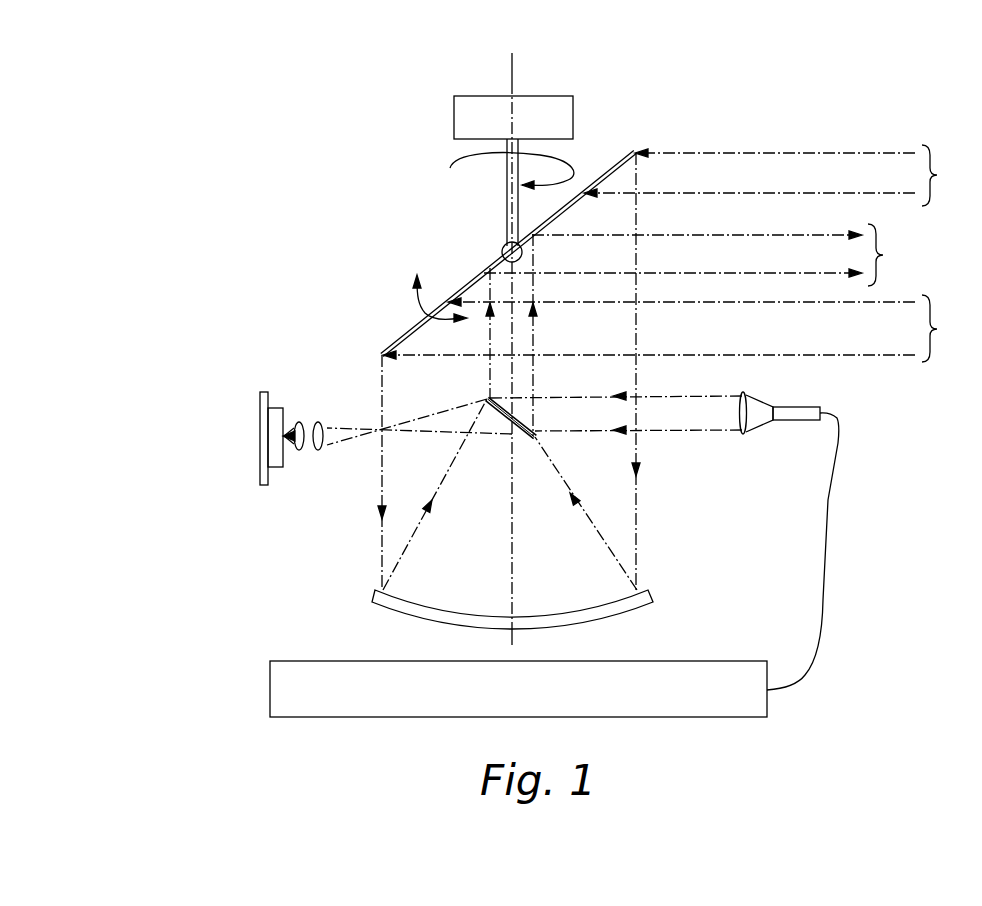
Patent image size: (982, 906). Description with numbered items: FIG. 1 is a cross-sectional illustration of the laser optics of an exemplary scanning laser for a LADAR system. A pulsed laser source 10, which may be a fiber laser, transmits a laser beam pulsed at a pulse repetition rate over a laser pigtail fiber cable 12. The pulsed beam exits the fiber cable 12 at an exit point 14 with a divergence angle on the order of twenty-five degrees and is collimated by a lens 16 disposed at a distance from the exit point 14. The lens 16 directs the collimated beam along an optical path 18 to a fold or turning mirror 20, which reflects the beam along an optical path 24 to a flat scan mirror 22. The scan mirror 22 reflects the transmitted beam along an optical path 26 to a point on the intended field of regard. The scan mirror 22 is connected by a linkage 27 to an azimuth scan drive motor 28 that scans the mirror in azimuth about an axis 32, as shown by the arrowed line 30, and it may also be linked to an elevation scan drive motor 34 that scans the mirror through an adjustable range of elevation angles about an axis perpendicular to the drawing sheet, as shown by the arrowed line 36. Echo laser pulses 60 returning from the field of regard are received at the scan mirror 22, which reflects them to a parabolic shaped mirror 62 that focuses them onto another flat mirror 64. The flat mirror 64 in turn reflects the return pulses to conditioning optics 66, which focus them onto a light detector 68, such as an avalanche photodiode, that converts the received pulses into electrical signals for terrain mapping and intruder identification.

The pulsed laser source 10 is at (722, 668).
The laser pigtail fiber cable 12 is at (827, 533).
The exit point 14 is at (758, 418).
The lens 16 is at (743, 434).
The optical path 18 is at (665, 408).
The fold or turning mirror 20 is at (527, 413).
The flat scan mirror 22 is at (467, 283).
The optical path 24 is at (523, 341).
The optical path 26 is at (700, 255).
The linkage 27 is at (507, 210).
The azimuth scan drive motor 28 is at (454, 118).
The arrowed line 30 is at (452, 157).
The axis 32 is at (512, 80).
The elevation scan drive motor 34 is at (503, 247).
The arrowed line 36 is at (418, 308).
The echo laser pulses 60 is at (676, 253).
The parabolic shaped mirror 62 is at (597, 607).
The flat mirror 64 is at (498, 417).
The conditioning optics 66 is at (300, 408).
The light detector 68 is at (275, 423).